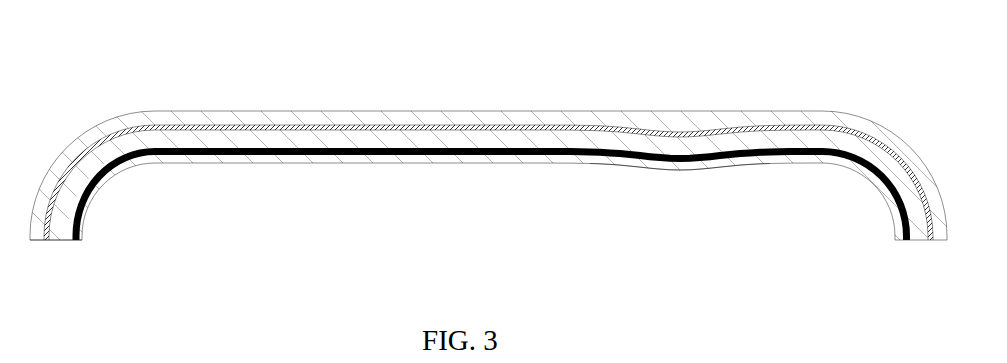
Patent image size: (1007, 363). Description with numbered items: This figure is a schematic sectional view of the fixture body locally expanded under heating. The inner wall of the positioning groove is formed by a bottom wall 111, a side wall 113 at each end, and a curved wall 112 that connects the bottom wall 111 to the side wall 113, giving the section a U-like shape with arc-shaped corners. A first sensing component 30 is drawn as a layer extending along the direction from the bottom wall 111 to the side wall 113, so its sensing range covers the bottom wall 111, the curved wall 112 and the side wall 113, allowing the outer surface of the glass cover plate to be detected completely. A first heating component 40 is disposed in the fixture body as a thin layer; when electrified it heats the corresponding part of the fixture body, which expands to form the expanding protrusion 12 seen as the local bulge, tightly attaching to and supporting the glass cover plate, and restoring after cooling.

The expanding protrusion 12 is at (687, 169).
The first sensing component 30 is at (528, 158).
The first heating component 40 is at (363, 125).
The bottom wall 111 is at (428, 164).
The curved wall 112 is at (123, 178).
The side wall 113 is at (85, 236).